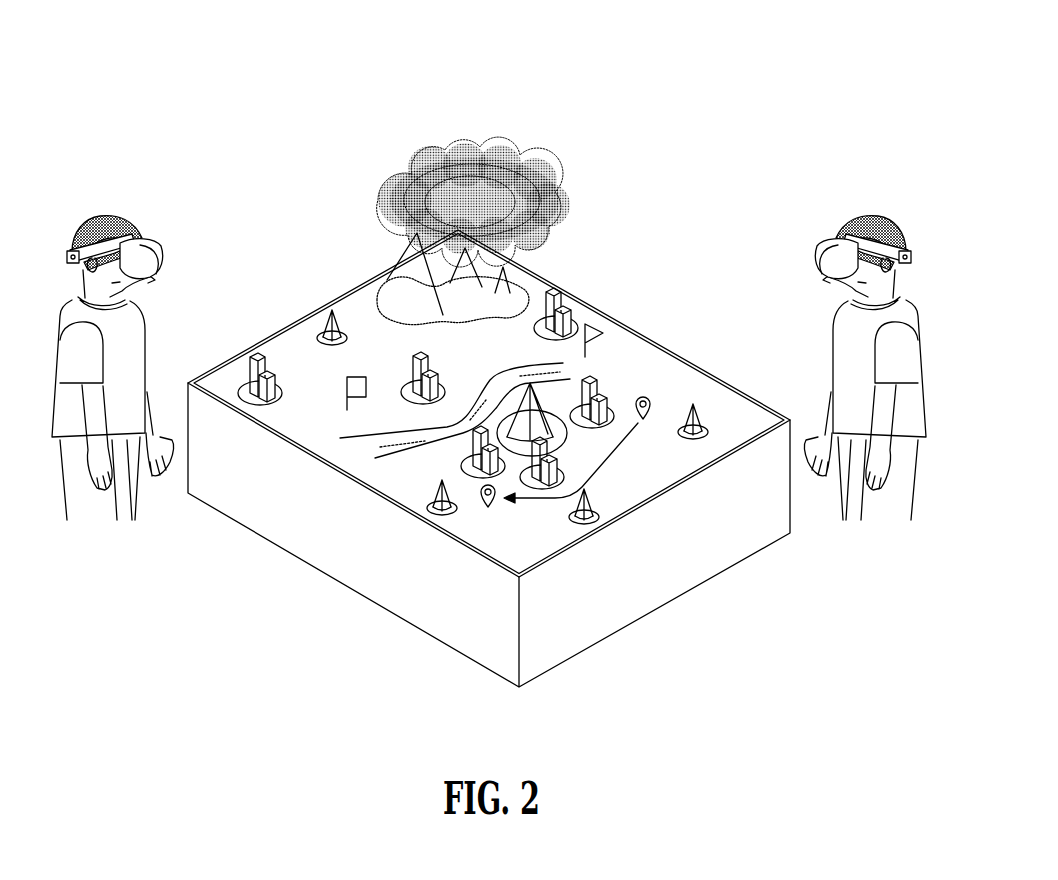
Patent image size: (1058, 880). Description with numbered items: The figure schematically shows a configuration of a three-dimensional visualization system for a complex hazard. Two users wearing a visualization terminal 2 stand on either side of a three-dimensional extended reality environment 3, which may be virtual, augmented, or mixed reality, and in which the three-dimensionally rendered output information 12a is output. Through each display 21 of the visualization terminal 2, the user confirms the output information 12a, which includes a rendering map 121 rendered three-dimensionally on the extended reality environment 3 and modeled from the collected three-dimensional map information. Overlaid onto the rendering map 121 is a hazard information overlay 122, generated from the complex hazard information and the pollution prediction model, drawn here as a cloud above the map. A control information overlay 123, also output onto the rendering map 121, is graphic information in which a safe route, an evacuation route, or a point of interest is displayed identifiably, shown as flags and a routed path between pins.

The 3D extended reality environment 3 is at (885, 67).
The visualization terminal 2 is at (156, 218).
The display 21 is at (165, 256).
The 3D output information 12a is at (577, 151).
The 3D rendering map 121 is at (670, 373).
The hazard information overlay 122 is at (437, 155).
The control information overlay 123 is at (593, 325).